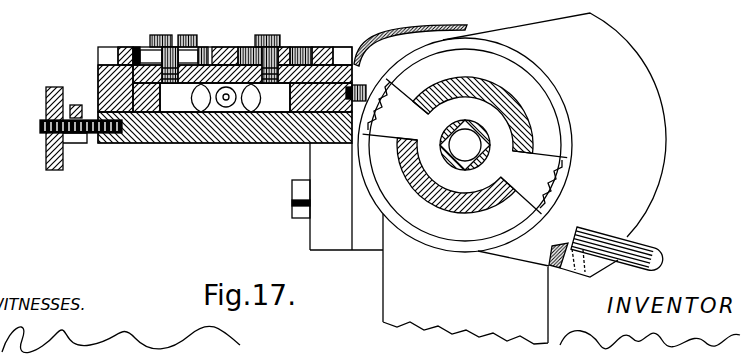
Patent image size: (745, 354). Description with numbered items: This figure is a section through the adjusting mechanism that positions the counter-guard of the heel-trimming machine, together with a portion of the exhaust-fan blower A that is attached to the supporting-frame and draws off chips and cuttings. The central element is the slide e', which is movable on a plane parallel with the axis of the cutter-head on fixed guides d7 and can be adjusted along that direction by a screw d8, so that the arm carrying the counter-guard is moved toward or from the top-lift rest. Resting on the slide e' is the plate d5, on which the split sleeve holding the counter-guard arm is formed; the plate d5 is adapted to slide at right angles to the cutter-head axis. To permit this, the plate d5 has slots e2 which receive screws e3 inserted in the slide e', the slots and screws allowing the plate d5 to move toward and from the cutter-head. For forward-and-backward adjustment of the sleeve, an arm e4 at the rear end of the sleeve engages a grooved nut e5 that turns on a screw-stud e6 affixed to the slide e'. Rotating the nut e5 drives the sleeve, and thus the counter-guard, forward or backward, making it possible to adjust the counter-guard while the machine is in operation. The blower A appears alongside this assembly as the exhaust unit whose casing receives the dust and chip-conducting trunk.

The slide e' is at (207, 95).
The slots e2 is at (147, 52).
The screws e3 is at (173, 47).
The arm e4 is at (78, 103).
The grooved nut e5 is at (47, 105).
The screw-stud e6 is at (45, 132).
The plate d5 is at (222, 48).
The fixed guides d7 is at (148, 100).
The screw d8 is at (225, 97).
The exhaust-fan blower A is at (479, 178).
The ring A' is at (507, 138).